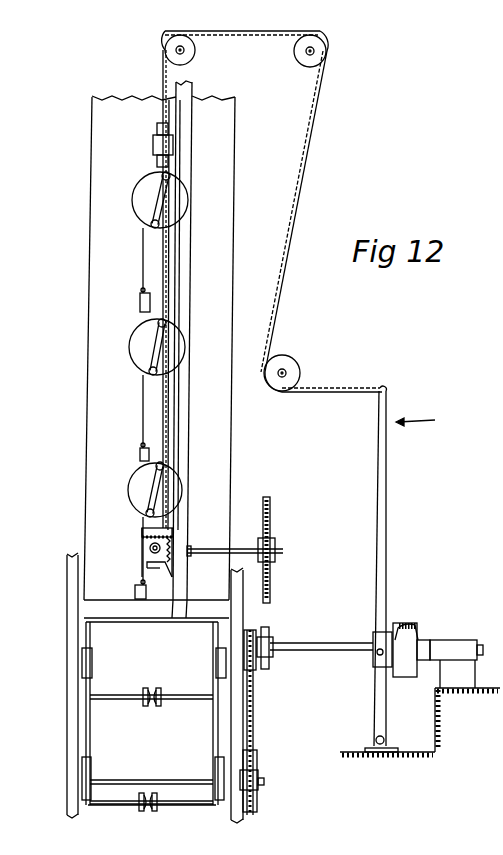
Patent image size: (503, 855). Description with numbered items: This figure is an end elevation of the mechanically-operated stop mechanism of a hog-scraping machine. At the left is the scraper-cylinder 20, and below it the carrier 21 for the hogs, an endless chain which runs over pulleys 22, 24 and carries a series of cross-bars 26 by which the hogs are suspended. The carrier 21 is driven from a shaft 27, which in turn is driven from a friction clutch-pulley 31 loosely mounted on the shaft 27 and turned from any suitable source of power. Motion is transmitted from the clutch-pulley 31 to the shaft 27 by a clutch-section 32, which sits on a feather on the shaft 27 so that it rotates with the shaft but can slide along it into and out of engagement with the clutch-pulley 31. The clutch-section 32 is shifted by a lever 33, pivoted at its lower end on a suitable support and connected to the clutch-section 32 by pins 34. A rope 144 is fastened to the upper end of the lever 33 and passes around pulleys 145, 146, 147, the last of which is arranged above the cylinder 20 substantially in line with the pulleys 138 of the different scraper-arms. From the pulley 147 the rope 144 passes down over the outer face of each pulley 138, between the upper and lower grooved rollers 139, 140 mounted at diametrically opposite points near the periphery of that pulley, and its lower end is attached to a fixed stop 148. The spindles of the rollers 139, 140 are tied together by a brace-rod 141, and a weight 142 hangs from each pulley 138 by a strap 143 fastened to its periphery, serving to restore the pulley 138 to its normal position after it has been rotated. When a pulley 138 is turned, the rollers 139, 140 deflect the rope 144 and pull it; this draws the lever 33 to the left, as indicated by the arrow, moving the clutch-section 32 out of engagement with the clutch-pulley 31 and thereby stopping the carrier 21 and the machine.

The pulley 147 is at (190, 55).
The pulley 146 is at (302, 60).
The rope 144 is at (312, 152).
The pulley 145 is at (283, 357).
The lever 33 is at (386, 494).
The grooved roller 140 is at (170, 180).
The brace-rod 141 is at (148, 196).
The pulley 138 is at (188, 204).
The grooved roller 139 is at (151, 222).
The strap 143 is at (142, 257).
The weight 142 is at (139, 301).
The scraper-cylinder 20 is at (155, 452).
The fixed stop 148 is at (150, 551).
The pulley 24 is at (93, 662).
The carrier 21 is at (103, 722).
The pulley 22 is at (95, 775).
The cross-bar 26 is at (112, 806).
The shaft 27 is at (309, 656).
The pin 34 is at (378, 657).
The clutch-section 32 is at (407, 623).
The friction clutch-pulley 31 is at (415, 626).